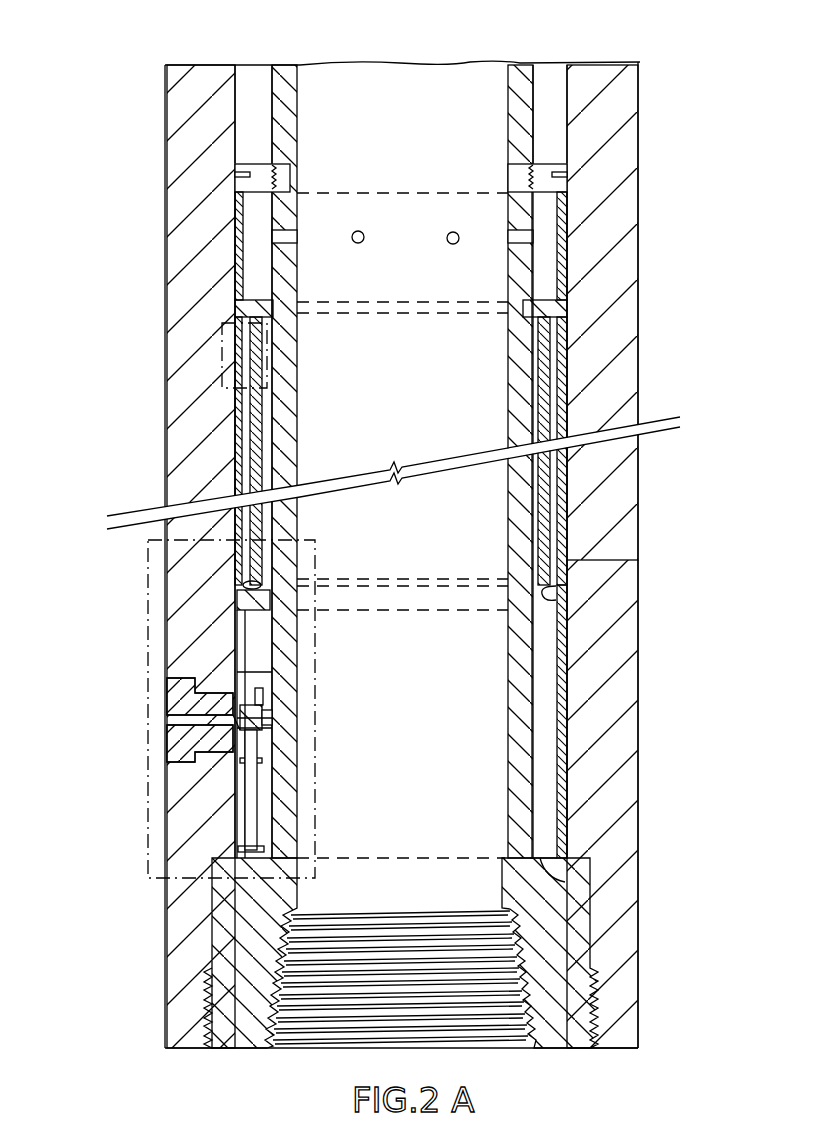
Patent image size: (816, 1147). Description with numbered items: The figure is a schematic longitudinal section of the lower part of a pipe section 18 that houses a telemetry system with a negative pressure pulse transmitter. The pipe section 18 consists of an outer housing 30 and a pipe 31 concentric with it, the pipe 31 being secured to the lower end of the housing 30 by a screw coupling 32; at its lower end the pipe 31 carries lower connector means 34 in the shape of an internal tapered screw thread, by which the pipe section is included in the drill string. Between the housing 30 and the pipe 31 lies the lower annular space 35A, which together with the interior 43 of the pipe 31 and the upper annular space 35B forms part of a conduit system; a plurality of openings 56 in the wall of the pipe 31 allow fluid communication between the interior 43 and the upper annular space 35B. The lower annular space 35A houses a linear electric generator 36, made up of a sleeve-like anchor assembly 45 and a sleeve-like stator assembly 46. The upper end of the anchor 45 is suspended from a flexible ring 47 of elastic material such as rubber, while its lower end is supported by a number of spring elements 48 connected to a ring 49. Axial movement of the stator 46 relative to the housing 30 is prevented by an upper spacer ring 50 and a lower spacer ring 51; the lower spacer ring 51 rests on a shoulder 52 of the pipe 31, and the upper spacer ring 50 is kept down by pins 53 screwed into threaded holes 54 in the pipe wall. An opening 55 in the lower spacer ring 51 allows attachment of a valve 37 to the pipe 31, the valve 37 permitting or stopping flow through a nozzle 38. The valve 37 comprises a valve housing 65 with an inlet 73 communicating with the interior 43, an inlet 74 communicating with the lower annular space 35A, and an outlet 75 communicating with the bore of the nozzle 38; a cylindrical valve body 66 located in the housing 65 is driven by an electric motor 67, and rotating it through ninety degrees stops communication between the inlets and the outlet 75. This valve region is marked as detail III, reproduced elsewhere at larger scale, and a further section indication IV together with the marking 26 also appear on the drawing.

The pipe section 18 is at (160, 156).
The section III region 26 is at (84, 717).
The housing 30 is at (232, 188).
The pipe 31 is at (521, 78).
The screw coupling 32 is at (206, 1010).
The lower connector means 34 is at (284, 1048).
The lower annular space 35A is at (258, 638).
The upper annular space 35B is at (553, 262).
The linear electric generator 36 is at (338, 451).
The valve 37 is at (232, 813).
The nozzle 38 is at (172, 745).
The interior of the pipe 43 is at (456, 673).
The anchor assembly 45 is at (255, 437).
The stator assembly 46 is at (237, 467).
The flexible ring 47 is at (262, 305).
The spring elements 48 is at (280, 612).
The ring 49 is at (235, 596).
The upper spacer ring 50 is at (240, 232).
The lower spacer ring 51 is at (565, 825).
The shoulder 52 is at (565, 882).
The pins 53 is at (265, 172).
The threaded holes 54 is at (290, 175).
The opening 55 is at (240, 672).
The openings 56 is at (352, 233).
The valve housing 65 is at (285, 740).
The cylindrical valve body 66 is at (270, 762).
The electric motor 67 is at (258, 808).
The inlet 73 is at (290, 717).
The inlet 74 is at (265, 692).
The outlet 75 is at (221, 754).
The section IV is at (268, 356).
The detail III is at (315, 556).